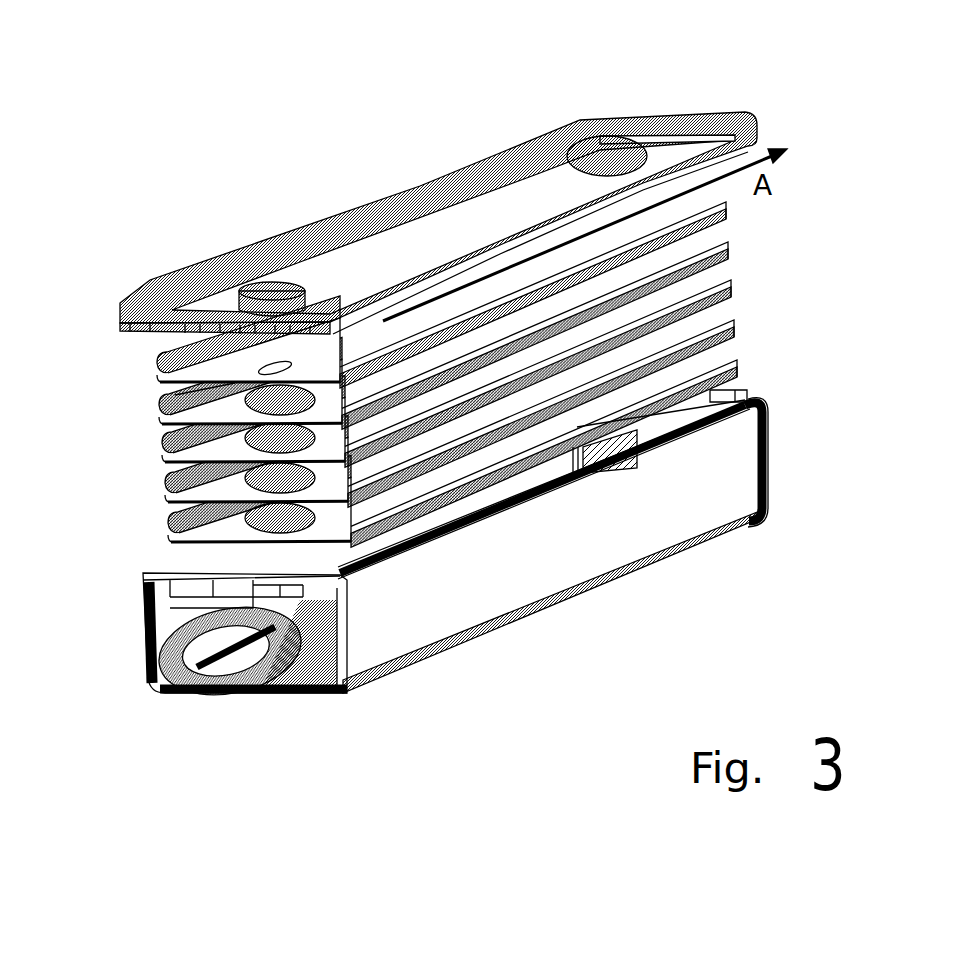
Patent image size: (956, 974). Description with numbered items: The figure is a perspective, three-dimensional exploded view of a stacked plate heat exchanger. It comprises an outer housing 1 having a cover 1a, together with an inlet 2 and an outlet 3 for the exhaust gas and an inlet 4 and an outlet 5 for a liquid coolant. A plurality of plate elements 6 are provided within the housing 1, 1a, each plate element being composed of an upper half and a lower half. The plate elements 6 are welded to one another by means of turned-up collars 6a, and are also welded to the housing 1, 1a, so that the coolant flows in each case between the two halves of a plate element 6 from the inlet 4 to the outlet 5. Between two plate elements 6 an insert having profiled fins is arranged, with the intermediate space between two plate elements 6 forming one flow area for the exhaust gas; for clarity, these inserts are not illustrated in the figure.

The outer housing 1 is at (421, 605).
The cover 1a is at (380, 245).
The inlet 2 is at (227, 697).
The outlet 3 is at (738, 382).
The inlet 4 is at (262, 284).
The outlet 5 is at (570, 127).
The plate elements 6 is at (212, 550).
The turned-up collars 6a is at (243, 400).